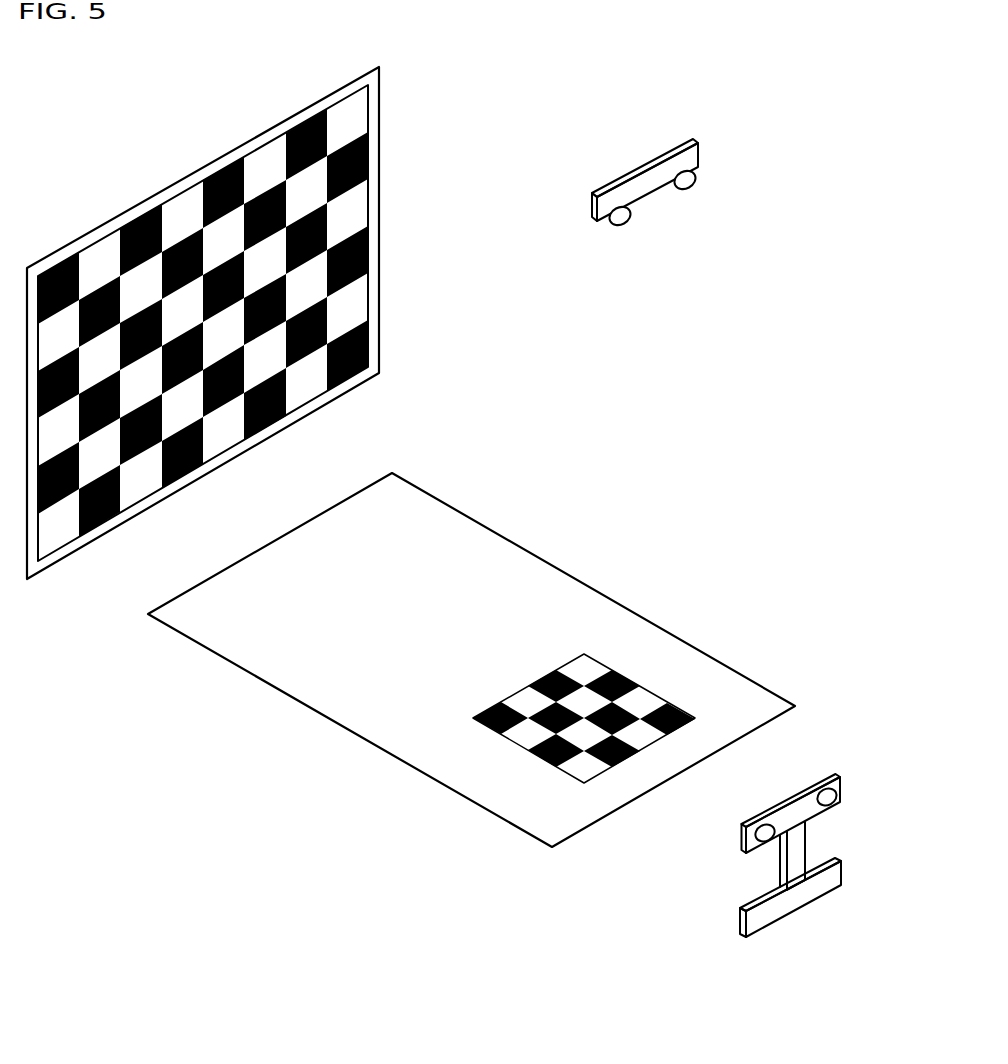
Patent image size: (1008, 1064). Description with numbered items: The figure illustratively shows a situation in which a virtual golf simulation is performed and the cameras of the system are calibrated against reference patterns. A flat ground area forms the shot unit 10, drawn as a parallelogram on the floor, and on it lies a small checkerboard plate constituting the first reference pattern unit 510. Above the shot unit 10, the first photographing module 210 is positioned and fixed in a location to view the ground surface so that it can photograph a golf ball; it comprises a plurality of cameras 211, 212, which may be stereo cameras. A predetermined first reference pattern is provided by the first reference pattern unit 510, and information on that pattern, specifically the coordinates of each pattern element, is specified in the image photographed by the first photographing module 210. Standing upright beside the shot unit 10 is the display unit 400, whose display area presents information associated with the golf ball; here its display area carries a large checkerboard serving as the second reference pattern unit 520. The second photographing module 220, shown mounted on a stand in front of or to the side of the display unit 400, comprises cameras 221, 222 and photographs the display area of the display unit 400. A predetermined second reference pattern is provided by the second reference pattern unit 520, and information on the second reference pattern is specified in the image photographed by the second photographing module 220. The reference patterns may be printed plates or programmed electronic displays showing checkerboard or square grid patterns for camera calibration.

The shot unit 10 is at (360, 738).
The display unit 400 is at (232, 323).
The second reference pattern unit 520 is at (368, 207).
The first reference pattern unit 510 is at (650, 690).
The first photographing module 210 is at (680, 169).
The camera 211 is at (631, 216).
The camera 212 is at (695, 181).
The second photographing module 220 is at (794, 830).
The camera 221 is at (756, 836).
The camera 222 is at (836, 793).